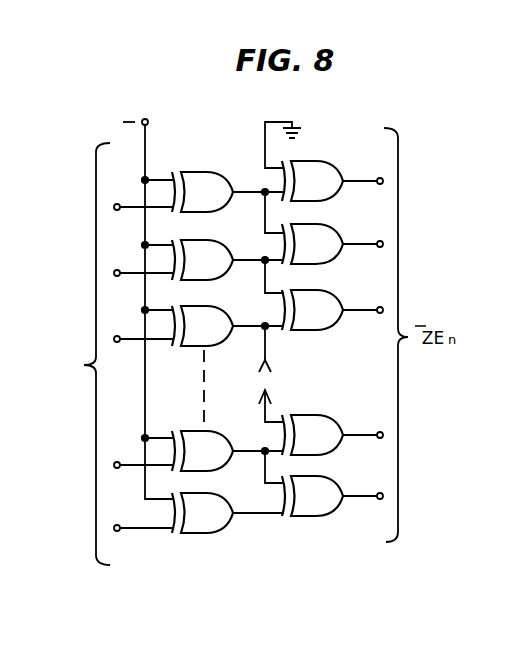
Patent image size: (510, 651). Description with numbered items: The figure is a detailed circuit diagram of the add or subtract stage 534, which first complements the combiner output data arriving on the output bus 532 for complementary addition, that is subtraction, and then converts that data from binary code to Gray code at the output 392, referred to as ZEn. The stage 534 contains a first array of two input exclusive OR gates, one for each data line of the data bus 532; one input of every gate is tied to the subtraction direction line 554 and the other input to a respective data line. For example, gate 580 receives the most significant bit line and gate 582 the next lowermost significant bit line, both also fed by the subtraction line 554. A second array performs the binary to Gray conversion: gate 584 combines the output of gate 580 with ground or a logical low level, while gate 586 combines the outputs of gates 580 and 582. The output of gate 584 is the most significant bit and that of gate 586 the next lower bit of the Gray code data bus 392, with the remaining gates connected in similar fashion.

The output bus 532 is at (109, 354).
The subtraction direction line 554 is at (148, 119).
The output 392 is at (305, 141).
The exclusive OR gate 580 is at (228, 192).
The exclusive OR gate 582 is at (228, 260).
The exclusive OR gate 584 is at (332, 181).
The exclusive OR gate 586 is at (324, 228).
The add or subtract stage 534 is at (252, 532).